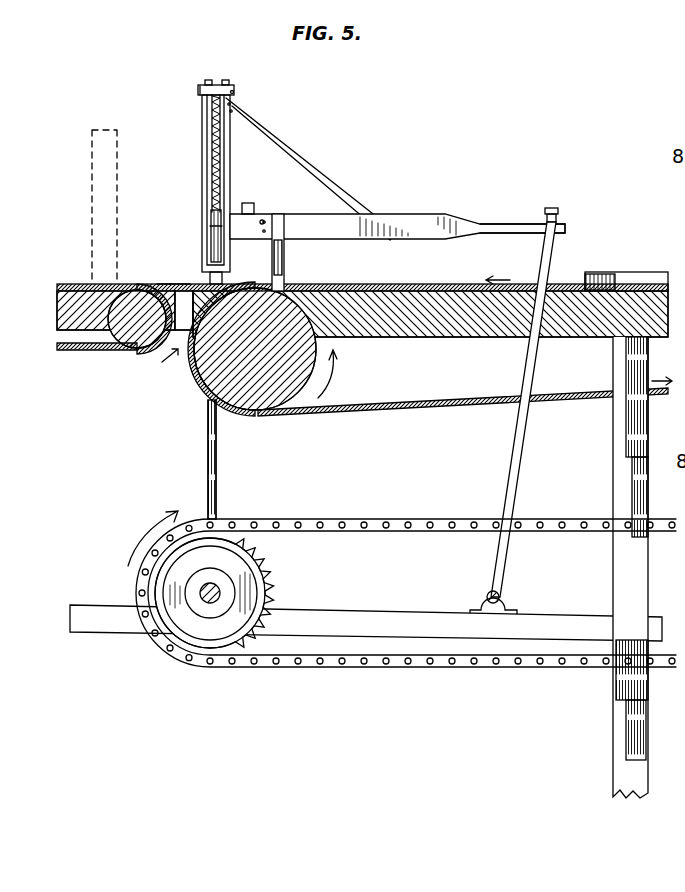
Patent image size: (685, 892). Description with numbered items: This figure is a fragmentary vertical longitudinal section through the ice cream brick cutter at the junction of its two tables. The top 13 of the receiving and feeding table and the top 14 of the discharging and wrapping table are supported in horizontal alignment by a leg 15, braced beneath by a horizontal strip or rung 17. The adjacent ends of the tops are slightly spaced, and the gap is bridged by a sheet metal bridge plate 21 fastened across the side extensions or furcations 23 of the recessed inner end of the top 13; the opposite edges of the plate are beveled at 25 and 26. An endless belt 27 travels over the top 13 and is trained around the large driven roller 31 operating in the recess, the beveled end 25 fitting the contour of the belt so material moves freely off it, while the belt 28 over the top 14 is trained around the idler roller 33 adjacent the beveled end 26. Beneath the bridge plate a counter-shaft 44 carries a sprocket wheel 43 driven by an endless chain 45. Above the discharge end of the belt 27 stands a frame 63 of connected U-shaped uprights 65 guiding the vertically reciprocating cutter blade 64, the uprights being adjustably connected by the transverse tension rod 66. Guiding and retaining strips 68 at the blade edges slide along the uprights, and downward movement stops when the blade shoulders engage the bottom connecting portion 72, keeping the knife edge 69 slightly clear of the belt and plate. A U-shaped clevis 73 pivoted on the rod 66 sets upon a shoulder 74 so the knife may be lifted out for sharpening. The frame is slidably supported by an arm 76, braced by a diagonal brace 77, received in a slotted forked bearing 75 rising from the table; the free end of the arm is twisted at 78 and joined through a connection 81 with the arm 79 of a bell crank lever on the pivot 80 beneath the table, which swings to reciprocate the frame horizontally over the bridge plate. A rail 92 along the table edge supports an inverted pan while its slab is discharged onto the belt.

The top 13 is at (422, 322).
The top 14 is at (78, 306).
The leg 15 is at (620, 472).
The strip or rung 17 is at (392, 648).
The bridge plate 21 is at (178, 283).
The side extension or furcation 23 is at (186, 338).
The beveled end 25 is at (212, 280).
The beveled end 26 is at (165, 284).
The belt 27 is at (478, 284).
The belt 28 is at (80, 283).
The driven roller 31 is at (272, 400).
The idler roller 33 is at (130, 332).
The sprocket wheel 43 is at (268, 578).
The counter-shaft 44 is at (200, 592).
The chain 45 is at (410, 522).
The frame 63 is at (195, 118).
The cutter blade 64 is at (212, 164).
The upright 65 is at (226, 178).
The tension rod 66 is at (236, 91).
The guiding and retaining strip 68 is at (256, 206).
The knife edge 69 is at (214, 224).
The connecting portion 72 is at (232, 258).
The clevis 73 is at (218, 86).
The shoulder 74 is at (200, 97).
The forked bearing 75 is at (272, 226).
The arm 76 is at (406, 228).
The diagonal brace 77 is at (300, 174).
The twisted end 78 is at (508, 225).
The arm 79 is at (548, 244).
The pivot 80 is at (502, 596).
The connection 81 is at (555, 222).
The rail 92 is at (643, 274).